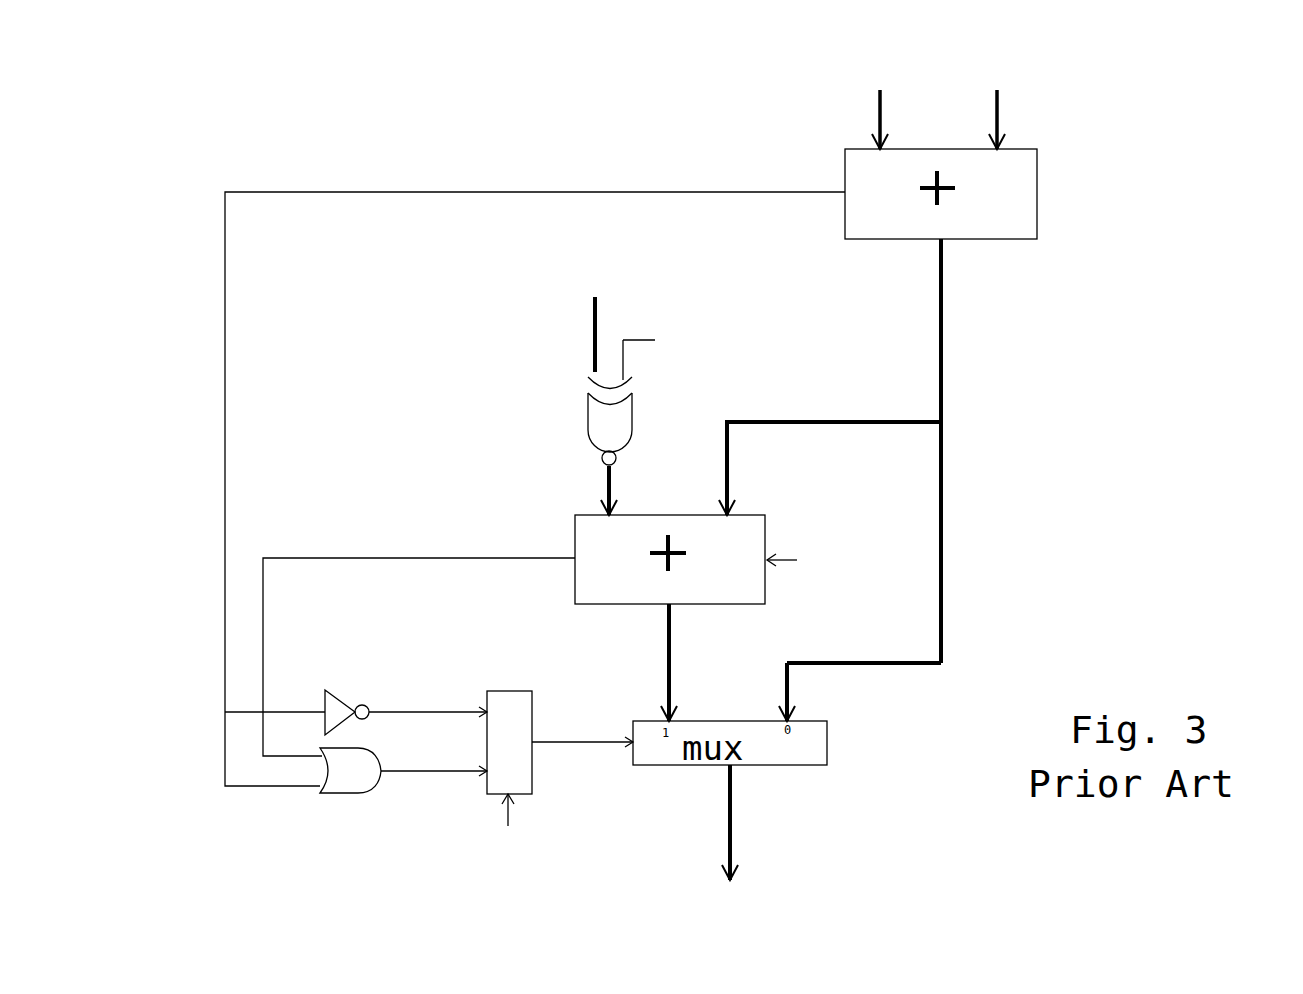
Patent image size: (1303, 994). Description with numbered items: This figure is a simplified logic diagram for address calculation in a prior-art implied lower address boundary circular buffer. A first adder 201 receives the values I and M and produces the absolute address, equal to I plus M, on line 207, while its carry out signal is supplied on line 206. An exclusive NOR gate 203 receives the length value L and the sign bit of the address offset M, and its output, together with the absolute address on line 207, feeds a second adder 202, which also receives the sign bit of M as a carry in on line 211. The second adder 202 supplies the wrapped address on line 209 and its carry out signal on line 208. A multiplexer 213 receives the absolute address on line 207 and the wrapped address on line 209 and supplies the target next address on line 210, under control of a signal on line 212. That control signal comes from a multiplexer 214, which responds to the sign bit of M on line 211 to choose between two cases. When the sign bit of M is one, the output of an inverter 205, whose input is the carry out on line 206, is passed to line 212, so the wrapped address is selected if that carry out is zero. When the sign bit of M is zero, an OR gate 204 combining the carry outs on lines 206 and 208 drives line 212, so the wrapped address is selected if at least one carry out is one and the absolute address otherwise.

The first adder 201 is at (971, 168).
The second adder 202 is at (670, 531).
The exclusive NOR gate 203 is at (593, 386).
The OR gate 204 is at (394, 803).
The inverter 205 is at (406, 684).
The line 206 is at (501, 489).
The line 207 is at (830, 451).
The line 208 is at (419, 629).
The line 209 is at (638, 662).
The line 210 is at (710, 822).
The line 211 is at (650, 592).
The line 212 is at (582, 717).
The multiplexer 213 is at (749, 692).
The multiplexer 214 is at (510, 690).